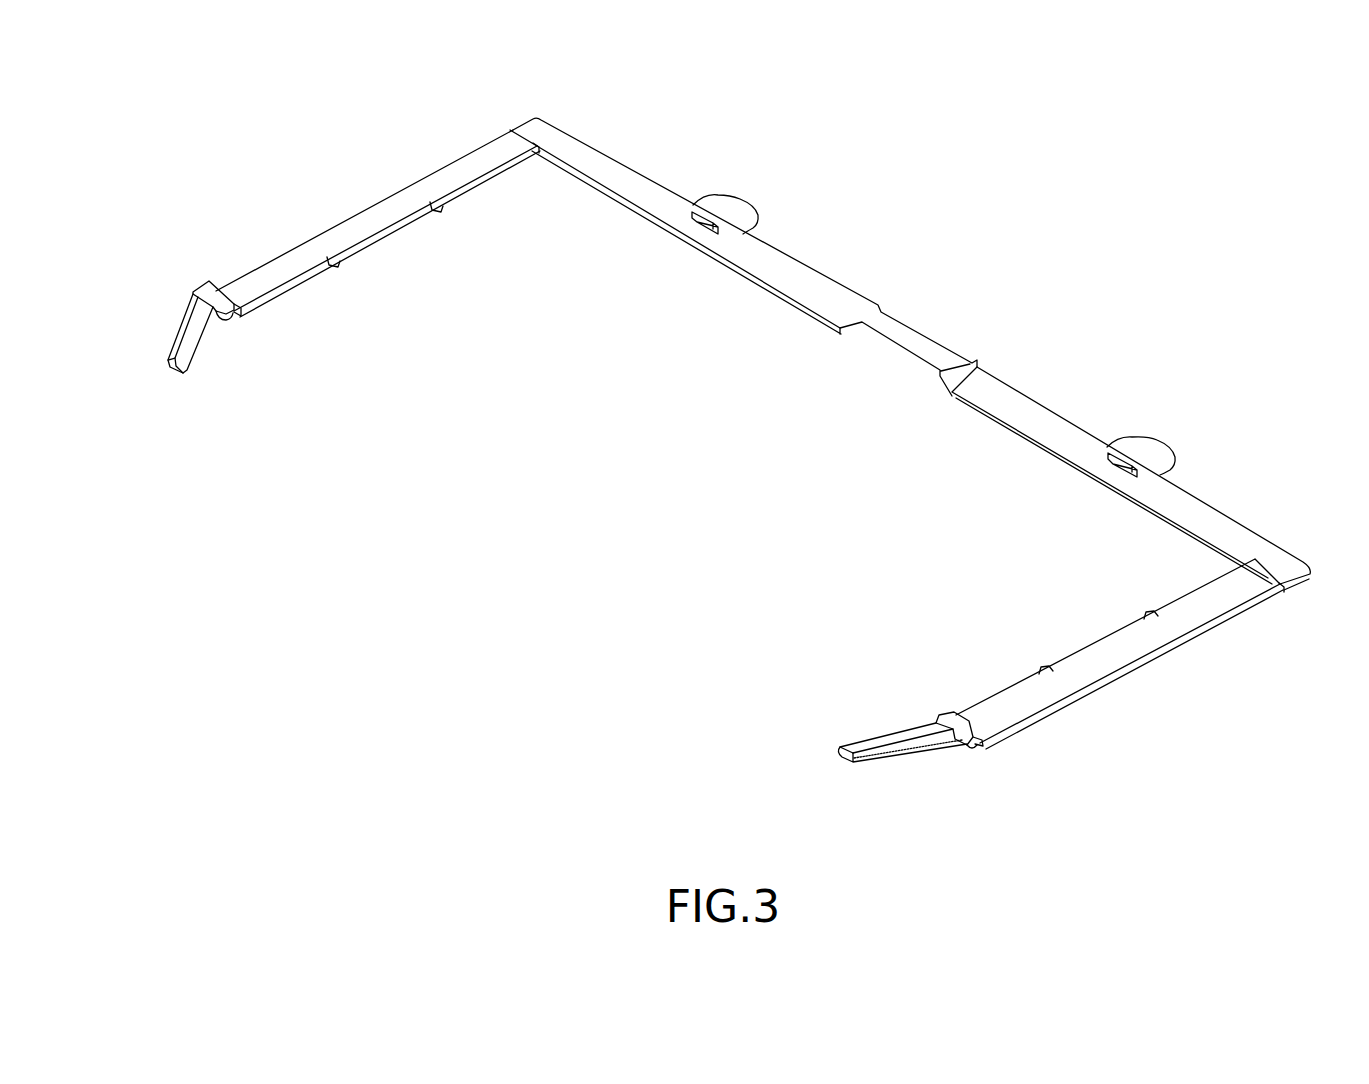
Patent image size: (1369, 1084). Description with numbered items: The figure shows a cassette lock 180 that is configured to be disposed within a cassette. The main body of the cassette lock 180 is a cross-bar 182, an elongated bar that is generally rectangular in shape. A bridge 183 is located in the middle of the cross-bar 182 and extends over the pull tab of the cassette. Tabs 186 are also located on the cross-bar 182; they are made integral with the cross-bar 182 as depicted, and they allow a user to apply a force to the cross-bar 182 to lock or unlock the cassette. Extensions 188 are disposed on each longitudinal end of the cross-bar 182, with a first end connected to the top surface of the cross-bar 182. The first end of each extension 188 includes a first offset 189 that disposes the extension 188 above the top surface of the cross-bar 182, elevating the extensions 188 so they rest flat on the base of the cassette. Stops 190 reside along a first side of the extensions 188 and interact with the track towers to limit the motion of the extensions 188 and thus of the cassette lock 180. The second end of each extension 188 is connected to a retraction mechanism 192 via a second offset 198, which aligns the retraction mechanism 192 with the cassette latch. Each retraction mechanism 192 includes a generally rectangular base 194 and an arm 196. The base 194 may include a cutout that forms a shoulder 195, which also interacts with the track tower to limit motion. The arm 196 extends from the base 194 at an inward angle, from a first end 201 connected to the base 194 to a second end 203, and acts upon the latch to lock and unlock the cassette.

The cassette lock 180 is at (1188, 219).
The cross-bar 182 is at (612, 177).
The bridge 183 is at (915, 337).
The tabs 186 is at (737, 212).
The extensions 188 is at (362, 235).
The first offset 189 is at (536, 152).
The stops 190 is at (337, 266).
The retraction mechanism 192 is at (194, 250).
The base 194 is at (200, 290).
The shoulder 195 is at (230, 318).
The arm 196 is at (195, 355).
The second offset 198 is at (238, 310).
The first end 201 is at (200, 313).
The second end 203 is at (165, 362).